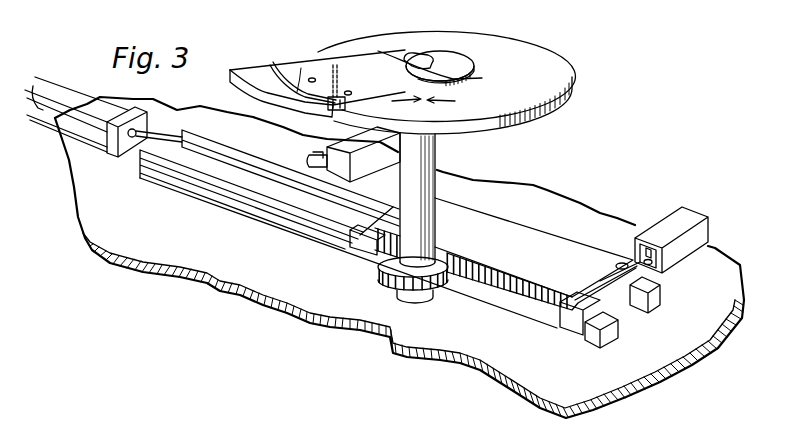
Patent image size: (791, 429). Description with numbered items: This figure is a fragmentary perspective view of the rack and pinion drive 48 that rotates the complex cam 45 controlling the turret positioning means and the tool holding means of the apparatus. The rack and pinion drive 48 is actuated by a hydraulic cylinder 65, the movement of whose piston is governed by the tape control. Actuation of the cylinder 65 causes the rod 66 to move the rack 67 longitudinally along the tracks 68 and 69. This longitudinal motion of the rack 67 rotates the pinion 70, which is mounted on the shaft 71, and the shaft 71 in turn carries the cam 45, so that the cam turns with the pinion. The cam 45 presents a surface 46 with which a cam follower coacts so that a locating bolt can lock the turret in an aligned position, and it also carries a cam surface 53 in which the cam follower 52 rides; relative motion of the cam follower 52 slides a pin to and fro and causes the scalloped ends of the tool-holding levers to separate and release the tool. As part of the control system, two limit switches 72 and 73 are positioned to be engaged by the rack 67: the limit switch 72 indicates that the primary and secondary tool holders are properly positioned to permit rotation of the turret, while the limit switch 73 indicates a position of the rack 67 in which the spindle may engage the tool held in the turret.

The cam 45 is at (514, 85).
The surface 46 is at (555, 104).
The rack and pinion drive 48 is at (514, 252).
The cam follower 52 is at (339, 97).
The cam surface 53 is at (299, 88).
The hydraulic cylinder 65 is at (53, 92).
The rod 66 is at (157, 147).
The rack 67 is at (563, 258).
The track 68 is at (603, 307).
The track 69 is at (647, 308).
The pinion 70 is at (382, 277).
The shaft 71 is at (427, 221).
The limit switch 72 is at (353, 154).
The limit switch 73 is at (662, 240).